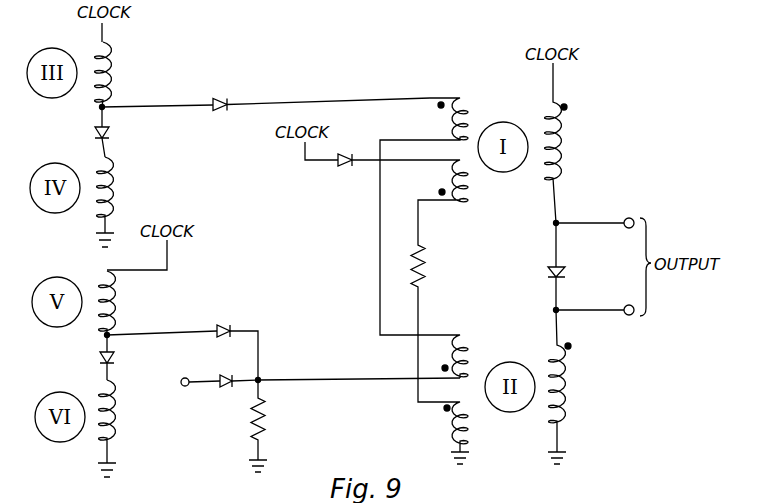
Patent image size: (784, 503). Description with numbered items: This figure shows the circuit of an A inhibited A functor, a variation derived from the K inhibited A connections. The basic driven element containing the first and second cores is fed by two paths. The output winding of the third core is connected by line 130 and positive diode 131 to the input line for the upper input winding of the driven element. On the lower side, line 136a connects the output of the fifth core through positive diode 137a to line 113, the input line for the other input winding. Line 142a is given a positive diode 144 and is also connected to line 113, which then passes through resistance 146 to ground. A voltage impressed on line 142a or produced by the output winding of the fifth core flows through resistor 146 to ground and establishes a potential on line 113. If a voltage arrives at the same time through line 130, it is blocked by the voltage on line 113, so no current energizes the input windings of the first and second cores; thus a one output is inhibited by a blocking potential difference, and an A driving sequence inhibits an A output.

The line 130 is at (193, 104).
The positive diode 131 is at (218, 99).
The line 136a is at (190, 333).
The positive diode 137a is at (220, 327).
The positive diode 144 is at (228, 372).
The line 142a is at (203, 408).
The resistance 146 is at (268, 428).
The input line 113 is at (366, 379).